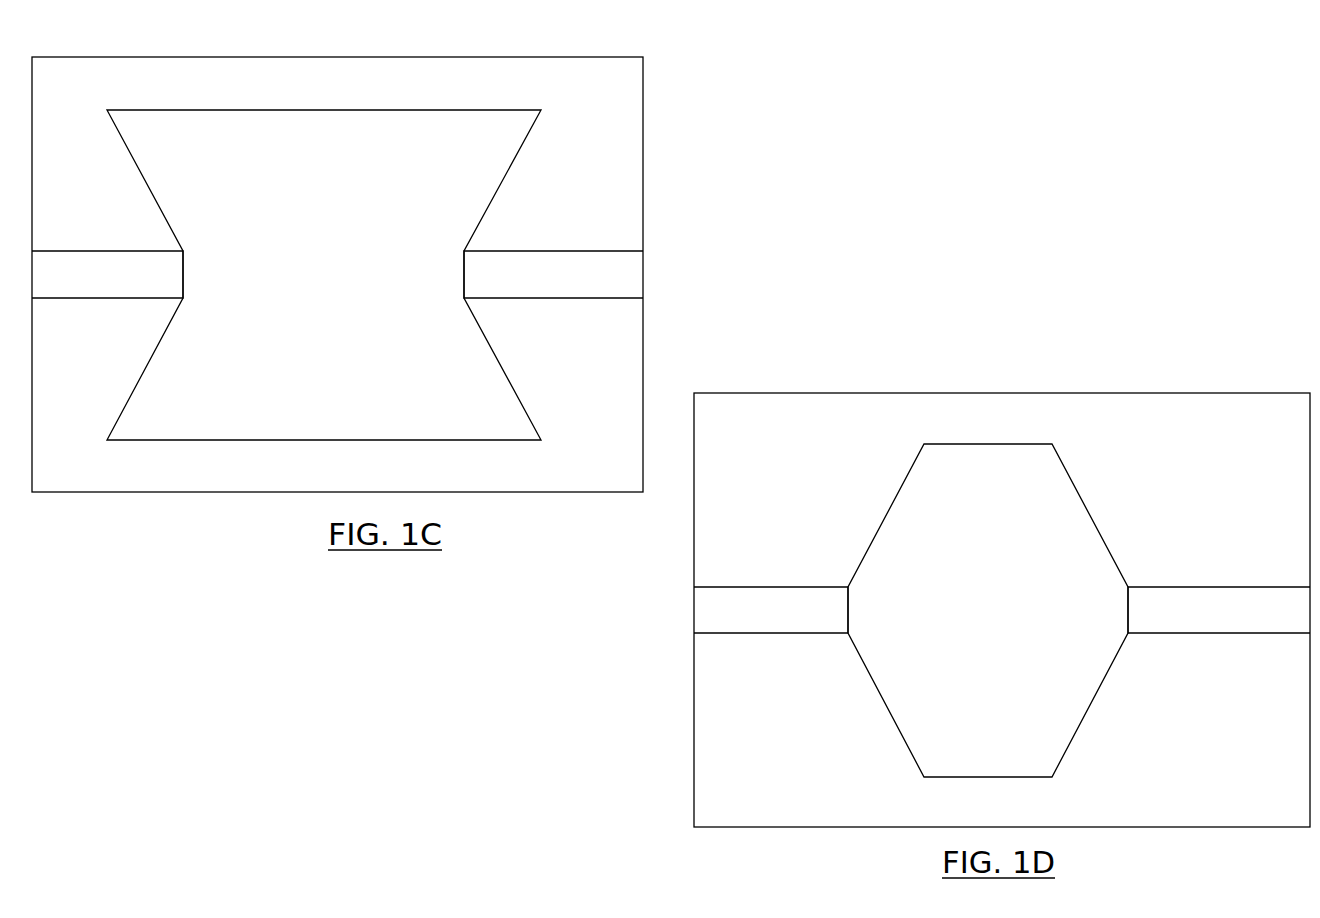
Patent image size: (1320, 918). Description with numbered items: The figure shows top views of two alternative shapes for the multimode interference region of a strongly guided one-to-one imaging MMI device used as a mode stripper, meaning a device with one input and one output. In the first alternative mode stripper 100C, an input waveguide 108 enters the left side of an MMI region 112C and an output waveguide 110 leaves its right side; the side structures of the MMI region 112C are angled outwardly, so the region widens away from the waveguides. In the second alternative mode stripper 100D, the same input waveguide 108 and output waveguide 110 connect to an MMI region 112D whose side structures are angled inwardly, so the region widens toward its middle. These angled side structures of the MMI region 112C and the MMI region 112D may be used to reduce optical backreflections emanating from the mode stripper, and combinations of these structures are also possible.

In FIG. 1C, the first alternative mode stripper 100C is at (682, 133).
In FIG. 1D, the second alternative mode stripper 100D is at (634, 735).
In FIG. 1C, the input waveguide 108 is at (167, 288).
In FIG. 1D, the input waveguide 108 is at (833, 623).
In FIG. 1C, the output waveguide 110 is at (630, 289).
In FIG. 1D, the output waveguide 110 is at (1297, 623).
In FIG. 1C, the MMI region 112C is at (353, 318).
In FIG. 1D, the MMI region 112D is at (1020, 653).